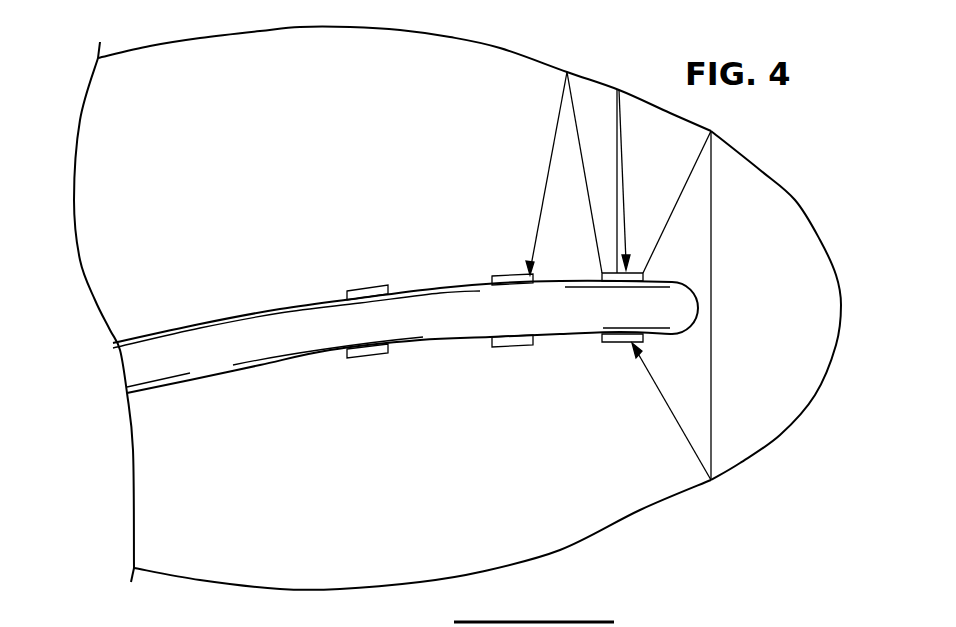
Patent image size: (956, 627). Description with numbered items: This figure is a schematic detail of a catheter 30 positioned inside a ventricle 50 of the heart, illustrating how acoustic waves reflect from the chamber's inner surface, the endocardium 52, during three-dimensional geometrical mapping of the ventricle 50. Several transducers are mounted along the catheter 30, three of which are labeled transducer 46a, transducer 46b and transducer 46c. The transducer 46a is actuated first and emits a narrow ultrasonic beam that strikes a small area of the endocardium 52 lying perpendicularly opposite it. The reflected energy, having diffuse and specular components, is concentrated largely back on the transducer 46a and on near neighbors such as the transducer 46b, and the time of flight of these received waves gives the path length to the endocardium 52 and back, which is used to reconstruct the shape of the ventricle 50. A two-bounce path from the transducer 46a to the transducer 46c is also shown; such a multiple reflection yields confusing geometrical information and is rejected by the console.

The catheter 30 is at (232, 322).
The ventricle 50 is at (276, 208).
The endocardium 52 is at (796, 196).
The transducer 46a is at (644, 275).
The transducer 46b is at (512, 275).
The transducer 46c is at (608, 344).